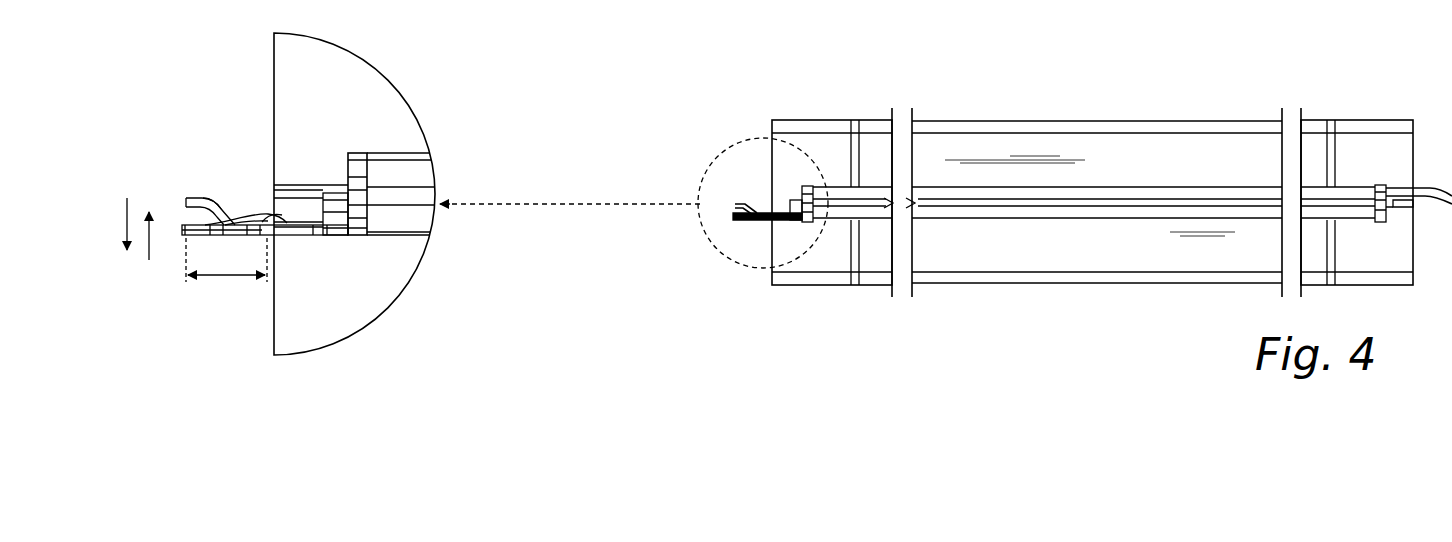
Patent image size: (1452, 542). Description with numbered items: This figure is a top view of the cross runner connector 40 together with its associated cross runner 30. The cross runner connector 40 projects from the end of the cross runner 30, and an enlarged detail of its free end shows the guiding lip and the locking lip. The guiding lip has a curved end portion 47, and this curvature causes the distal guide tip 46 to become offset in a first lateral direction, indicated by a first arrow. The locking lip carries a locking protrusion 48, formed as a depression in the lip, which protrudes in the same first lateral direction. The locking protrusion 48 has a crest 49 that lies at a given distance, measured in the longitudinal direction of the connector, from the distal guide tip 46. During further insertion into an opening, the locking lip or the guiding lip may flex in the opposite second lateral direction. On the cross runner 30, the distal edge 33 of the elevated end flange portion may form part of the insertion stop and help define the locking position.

The cross runner 30 is at (1140, 155).
The distal edge 33 is at (770, 153).
The cross runner connector 40 is at (188, 300).
The distal guide tip 46 is at (186, 200).
The end portion 47 is at (207, 188).
The locking protrusion 48 is at (263, 223).
The crest 49 is at (272, 214).